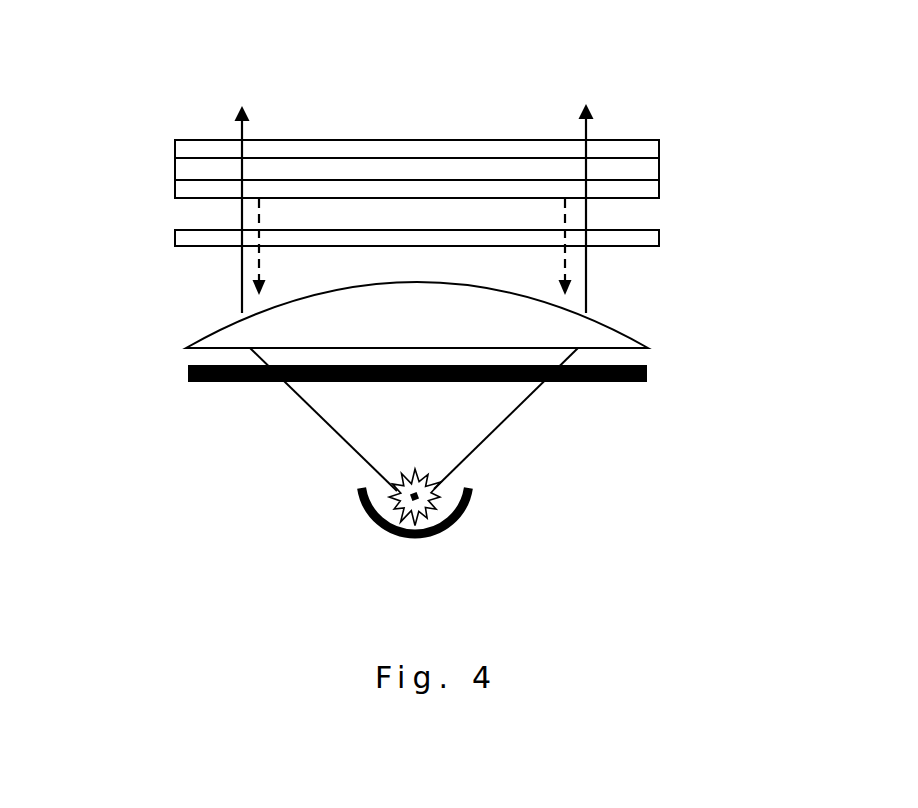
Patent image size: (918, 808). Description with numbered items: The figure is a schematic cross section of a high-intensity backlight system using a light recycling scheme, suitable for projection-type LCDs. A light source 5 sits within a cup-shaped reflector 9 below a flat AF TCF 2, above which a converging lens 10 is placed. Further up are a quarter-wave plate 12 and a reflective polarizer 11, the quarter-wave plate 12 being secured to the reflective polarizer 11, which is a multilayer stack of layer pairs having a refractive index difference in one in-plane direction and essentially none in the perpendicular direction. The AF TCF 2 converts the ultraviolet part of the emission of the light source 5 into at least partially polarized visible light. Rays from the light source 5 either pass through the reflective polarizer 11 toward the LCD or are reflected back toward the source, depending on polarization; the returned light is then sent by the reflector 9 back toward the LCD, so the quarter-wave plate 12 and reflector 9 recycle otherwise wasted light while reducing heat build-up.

The AF TCF 2 is at (618, 382).
The light source 5 is at (409, 495).
The reflector 9 is at (465, 527).
The converging lens 10 is at (607, 338).
The reflective polarizer 11 is at (649, 167).
The quarter-wave plate 12 is at (185, 238).